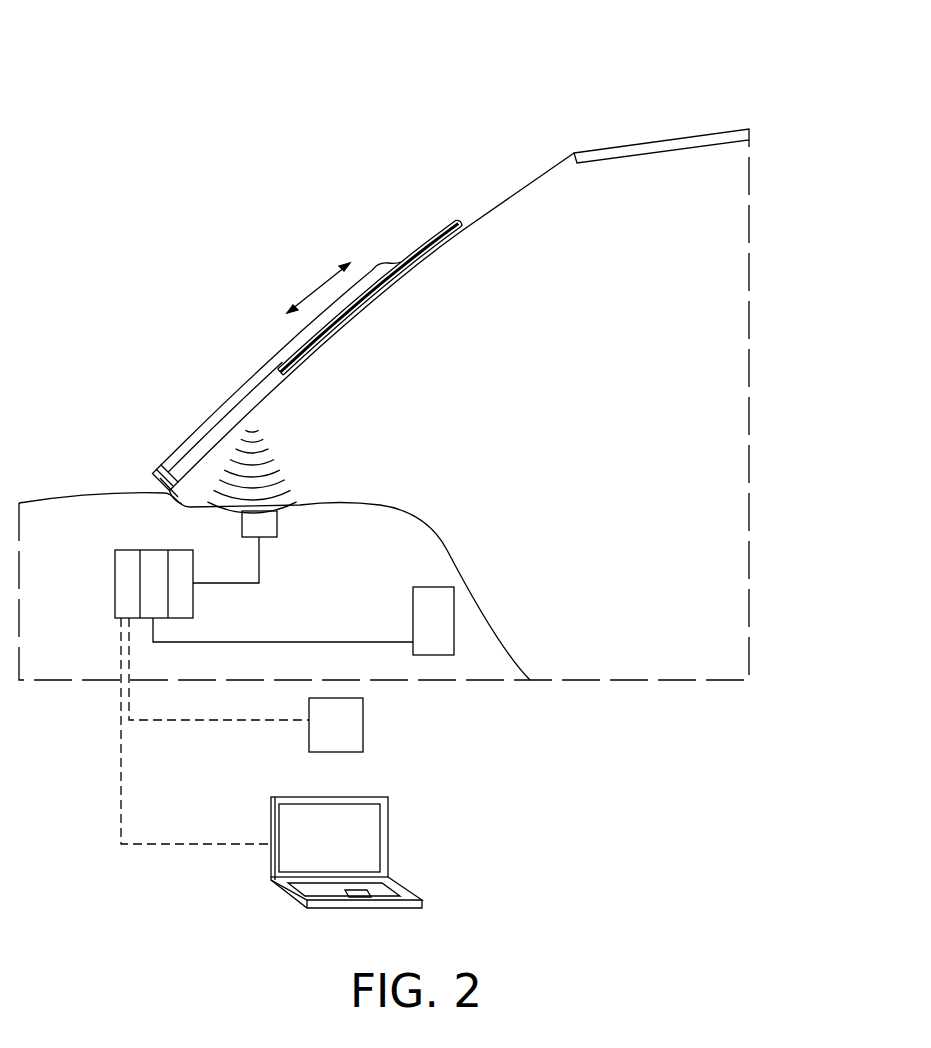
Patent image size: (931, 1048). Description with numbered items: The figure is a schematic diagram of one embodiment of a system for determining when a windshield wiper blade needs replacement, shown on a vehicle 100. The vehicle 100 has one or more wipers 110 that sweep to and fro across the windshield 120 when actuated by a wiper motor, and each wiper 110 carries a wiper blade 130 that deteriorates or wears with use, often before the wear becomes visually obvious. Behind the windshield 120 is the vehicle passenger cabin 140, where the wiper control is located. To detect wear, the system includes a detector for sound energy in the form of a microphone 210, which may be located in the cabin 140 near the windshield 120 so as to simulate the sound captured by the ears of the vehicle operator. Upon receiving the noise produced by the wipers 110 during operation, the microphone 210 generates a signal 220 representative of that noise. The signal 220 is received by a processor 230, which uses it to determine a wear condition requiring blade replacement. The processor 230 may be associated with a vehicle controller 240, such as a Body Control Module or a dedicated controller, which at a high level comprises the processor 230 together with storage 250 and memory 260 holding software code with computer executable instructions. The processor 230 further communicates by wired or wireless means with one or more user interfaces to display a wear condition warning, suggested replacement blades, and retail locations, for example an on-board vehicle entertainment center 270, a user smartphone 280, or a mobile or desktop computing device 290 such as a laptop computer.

The vehicle 100 is at (630, 80).
The wiper 110 is at (242, 313).
The windshield 120 is at (528, 183).
The wiper blade 130 is at (398, 262).
The vehicle passenger cabin 140 is at (667, 342).
The microphone 210 is at (270, 522).
The signal 220 is at (261, 563).
The processor 230 is at (125, 585).
The vehicle controller 240 is at (108, 514).
The storage 250 is at (153, 557).
The memory 260 is at (187, 605).
The vehicle entertainment center 270 is at (455, 595).
The smartphone 280 is at (363, 725).
The computing device 290 is at (422, 900).